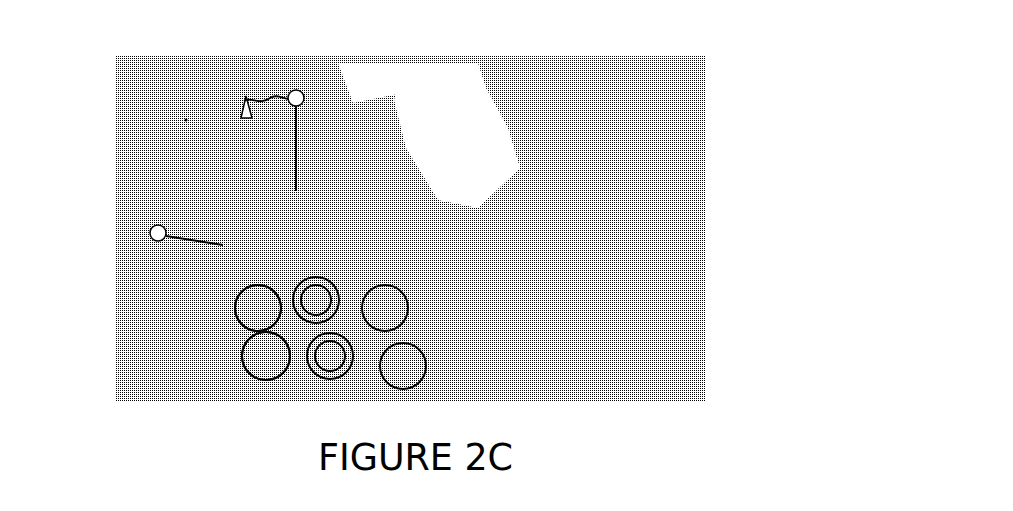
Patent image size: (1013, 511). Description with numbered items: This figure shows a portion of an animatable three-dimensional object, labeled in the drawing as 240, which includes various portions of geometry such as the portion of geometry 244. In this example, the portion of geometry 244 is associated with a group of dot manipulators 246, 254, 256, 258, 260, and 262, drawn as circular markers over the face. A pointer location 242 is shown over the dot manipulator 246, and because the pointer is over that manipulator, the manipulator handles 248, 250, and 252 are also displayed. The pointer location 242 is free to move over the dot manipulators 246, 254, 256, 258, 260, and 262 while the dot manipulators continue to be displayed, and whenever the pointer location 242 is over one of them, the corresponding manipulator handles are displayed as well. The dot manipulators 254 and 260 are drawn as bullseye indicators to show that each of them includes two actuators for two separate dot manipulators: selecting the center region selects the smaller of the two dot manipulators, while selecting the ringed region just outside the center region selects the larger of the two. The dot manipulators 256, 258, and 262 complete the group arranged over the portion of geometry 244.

The image of user face with mesh 240 is at (745, 148).
The pointer location 242 is at (250, 277).
The portion of geometry 244 is at (236, 344).
The dot manipulator 246 is at (227, 300).
The manipulator handle 248 is at (236, 93).
The manipulator handle 250 is at (142, 224).
The manipulator handle 252 is at (178, 112).
The dot manipulator 254 is at (310, 269).
The dot manipulator 256 is at (380, 277).
The dot manipulator 258 is at (250, 372).
The dot manipulator 260 is at (320, 362).
The dot manipulator 262 is at (420, 360).